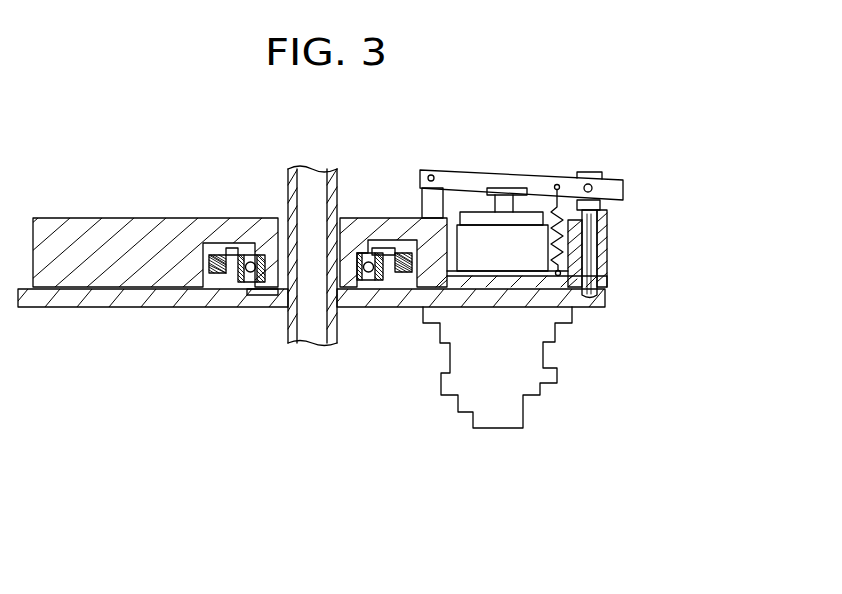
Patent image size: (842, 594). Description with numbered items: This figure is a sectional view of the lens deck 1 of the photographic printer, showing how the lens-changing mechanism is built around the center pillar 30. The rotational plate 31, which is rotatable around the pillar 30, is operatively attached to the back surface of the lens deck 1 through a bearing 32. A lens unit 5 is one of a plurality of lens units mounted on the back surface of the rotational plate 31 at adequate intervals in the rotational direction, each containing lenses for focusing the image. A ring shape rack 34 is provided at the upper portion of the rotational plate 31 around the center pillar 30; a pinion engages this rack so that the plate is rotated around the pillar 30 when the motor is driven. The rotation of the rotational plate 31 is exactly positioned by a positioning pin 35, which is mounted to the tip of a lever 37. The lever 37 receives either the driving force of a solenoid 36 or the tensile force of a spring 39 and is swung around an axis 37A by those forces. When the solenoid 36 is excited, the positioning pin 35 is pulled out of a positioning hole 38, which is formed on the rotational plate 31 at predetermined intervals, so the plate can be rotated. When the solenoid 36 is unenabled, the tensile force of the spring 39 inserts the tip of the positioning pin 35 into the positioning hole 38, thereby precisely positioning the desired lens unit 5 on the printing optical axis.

The lens deck 1 is at (119, 226).
The lens unit 5 is at (557, 384).
The pillar 30 is at (287, 185).
The rotational plate 31 is at (532, 308).
The bearing 32 is at (383, 279).
The ring shape rack 34 is at (220, 275).
The positioning pin 35 is at (623, 268).
The solenoid 36 is at (480, 232).
The lever 37 is at (446, 171).
The axis 37A is at (426, 177).
The positioning hole 38 is at (606, 289).
The spring 39 is at (553, 203).